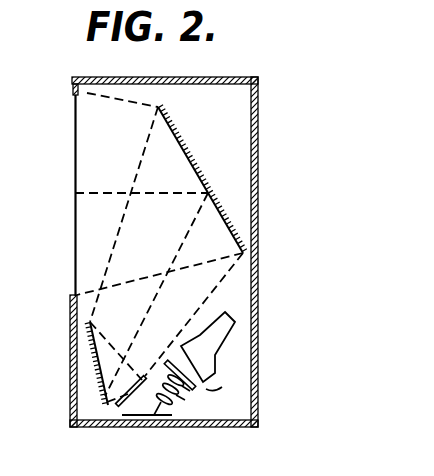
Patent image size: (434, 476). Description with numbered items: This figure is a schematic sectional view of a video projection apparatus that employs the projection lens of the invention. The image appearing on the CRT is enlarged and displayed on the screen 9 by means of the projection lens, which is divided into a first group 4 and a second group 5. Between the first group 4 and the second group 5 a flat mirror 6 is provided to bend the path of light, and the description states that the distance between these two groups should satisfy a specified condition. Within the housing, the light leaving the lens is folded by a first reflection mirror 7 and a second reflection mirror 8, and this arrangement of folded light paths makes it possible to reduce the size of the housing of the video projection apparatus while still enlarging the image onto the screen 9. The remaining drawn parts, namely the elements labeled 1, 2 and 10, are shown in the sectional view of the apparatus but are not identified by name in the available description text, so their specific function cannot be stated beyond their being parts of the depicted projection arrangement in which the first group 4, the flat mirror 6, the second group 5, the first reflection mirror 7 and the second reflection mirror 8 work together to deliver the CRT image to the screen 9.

The lamp base 1 is at (219, 374).
The lamp 2 is at (236, 321).
The first group 4 is at (116, 412).
The second group 5 is at (184, 391).
The flat mirror 6 is at (163, 419).
The first reflection mirror 7 is at (93, 352).
The second reflection mirror 8 is at (192, 165).
The screen 9 is at (75, 126).
The optical measuring device 10 is at (331, 203).